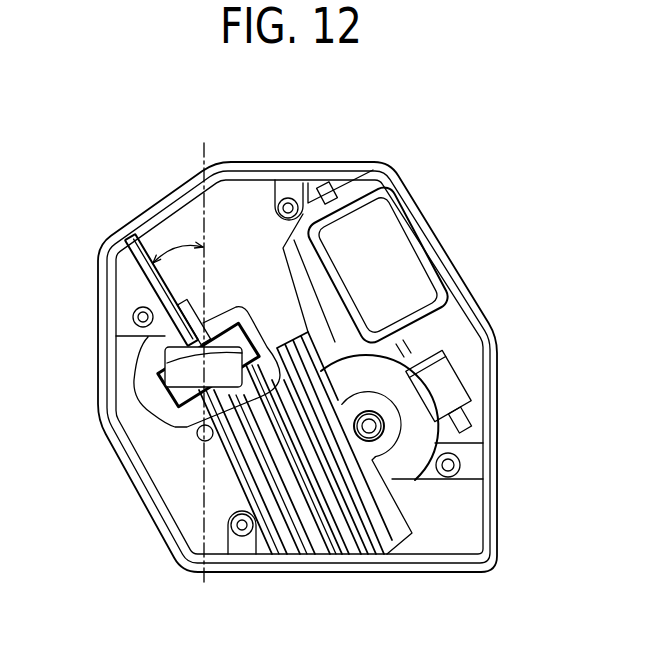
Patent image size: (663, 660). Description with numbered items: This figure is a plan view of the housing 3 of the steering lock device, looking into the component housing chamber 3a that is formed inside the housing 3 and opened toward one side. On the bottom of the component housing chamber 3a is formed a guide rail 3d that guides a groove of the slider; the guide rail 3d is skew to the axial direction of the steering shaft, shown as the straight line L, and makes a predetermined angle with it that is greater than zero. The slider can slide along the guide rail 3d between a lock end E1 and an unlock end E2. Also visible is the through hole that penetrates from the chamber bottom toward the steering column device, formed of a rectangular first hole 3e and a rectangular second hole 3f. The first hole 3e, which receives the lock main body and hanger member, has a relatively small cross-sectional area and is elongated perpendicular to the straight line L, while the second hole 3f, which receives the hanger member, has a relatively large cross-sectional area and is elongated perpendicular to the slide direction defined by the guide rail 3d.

The housing 3 is at (431, 205).
The component housing chamber 3a is at (462, 321).
The guide rail 3d is at (185, 282).
The first hole 3e is at (167, 358).
The second hole 3f is at (160, 383).
The lock end E1 is at (317, 554).
The unlock end E2 is at (132, 240).
The straight line L is at (205, 157).